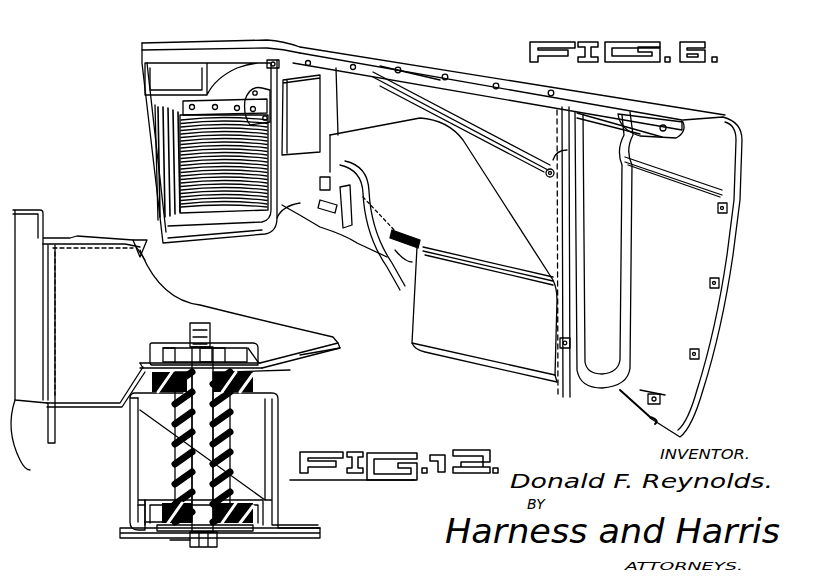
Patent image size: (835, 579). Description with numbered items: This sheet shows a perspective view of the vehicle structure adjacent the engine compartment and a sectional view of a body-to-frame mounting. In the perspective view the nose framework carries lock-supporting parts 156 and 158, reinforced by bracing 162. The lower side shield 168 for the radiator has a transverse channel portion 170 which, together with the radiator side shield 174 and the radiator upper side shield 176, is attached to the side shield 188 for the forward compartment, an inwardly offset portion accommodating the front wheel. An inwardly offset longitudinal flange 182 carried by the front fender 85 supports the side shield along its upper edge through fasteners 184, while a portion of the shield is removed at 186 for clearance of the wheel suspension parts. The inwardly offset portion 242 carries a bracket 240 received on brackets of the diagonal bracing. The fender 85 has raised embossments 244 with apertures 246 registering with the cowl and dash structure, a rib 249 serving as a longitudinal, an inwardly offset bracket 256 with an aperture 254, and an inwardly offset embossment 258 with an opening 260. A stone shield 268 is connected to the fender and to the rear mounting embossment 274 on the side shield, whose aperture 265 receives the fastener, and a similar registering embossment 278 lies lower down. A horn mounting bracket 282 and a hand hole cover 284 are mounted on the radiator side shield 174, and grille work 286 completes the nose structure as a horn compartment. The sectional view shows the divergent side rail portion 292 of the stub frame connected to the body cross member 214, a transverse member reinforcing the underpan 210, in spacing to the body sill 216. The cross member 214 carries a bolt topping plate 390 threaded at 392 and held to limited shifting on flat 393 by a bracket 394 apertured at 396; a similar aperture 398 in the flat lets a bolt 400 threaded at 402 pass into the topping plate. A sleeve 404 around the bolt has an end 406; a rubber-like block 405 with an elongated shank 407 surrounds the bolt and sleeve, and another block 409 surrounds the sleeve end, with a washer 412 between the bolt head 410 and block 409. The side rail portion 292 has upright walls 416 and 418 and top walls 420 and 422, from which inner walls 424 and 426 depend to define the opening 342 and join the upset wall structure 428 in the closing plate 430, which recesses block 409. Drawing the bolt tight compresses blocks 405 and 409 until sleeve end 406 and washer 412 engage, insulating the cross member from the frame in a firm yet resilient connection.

In FIG. 6, the front fender 85 is at (720, 115).
In FIG. 6, the lock-supporting part 156 is at (165, 88).
In FIG. 6, the lock-supporting part 158 is at (185, 42).
In FIG. 6, the bracing 162 is at (173, 163).
In FIG. 6, the lower side shield for the radiator 168 is at (283, 215).
In FIG. 6, the transverse channel portion 170 is at (227, 232).
In FIG. 6, the radiator side shield 174 is at (336, 66).
In FIG. 6, the radiator upper side shield 176 is at (280, 58).
In FIG. 6, the inwardly offset longitudinal flange 182 is at (470, 75).
In FIG. 6, the fasteners 184 is at (445, 75).
In FIG. 6, the removed portion of side shield 186 is at (330, 225).
In FIG. 6, the inwardly offset portion of side shield 188 is at (488, 362).
In FIG. 6, the bracket 240 is at (400, 235).
In FIG. 6, the bracket on diagonal bracing 242 is at (400, 270).
In FIG. 6, the raised embossments 244 is at (713, 355).
In FIG. 6, the apertures 246 is at (697, 355).
In FIG. 6, the rib 249 is at (693, 190).
In FIG. 6, the aperture 254 is at (668, 112).
In FIG. 6, the inwardly offset bracket 256 is at (653, 120).
In FIG. 6, the inwardly offset embossment 258 is at (640, 412).
In FIG. 6, the opening 260 is at (640, 405).
In FIG. 6, the aperture 265 is at (544, 170).
In FIG. 6, the stone shield 268 is at (555, 400).
In FIG. 6, the rear mounting embossment 274 is at (555, 160).
In FIG. 6, the registering embossment 278 is at (555, 340).
In FIG. 6, the horn mounting bracket 282 is at (335, 170).
In FIG. 6, the hand hole cover 284 is at (300, 75).
In FIG. 6, the grille work 286 is at (187, 145).
In FIG. 12, the underpan 210 is at (97, 238).
In FIG. 12, the body cross member 214 is at (138, 256).
In FIG. 12, the body sill 216 is at (33, 439).
In FIG. 12, the divergent side rail portion 292 is at (115, 477).
In FIG. 12, the opening 342 is at (270, 365).
In FIG. 12, the bolt topping plate 390 is at (165, 343).
In FIG. 12, the threaded portion of topping plate 392 is at (193, 325).
In FIG. 12, the flat 393 is at (152, 350).
In FIG. 12, the bracket 394 is at (232, 345).
In FIG. 12, the aperture 396 is at (212, 345).
In FIG. 12, the aperture 398 is at (255, 348).
In FIG. 12, the bolt 400 is at (205, 470).
In FIG. 12, the threaded portion of bolt 402 is at (200, 330).
In FIG. 12, the sleeve 404 is at (192, 460).
In FIG. 12, the rubber-like cushion or block 405 is at (140, 366).
In FIG. 12, the sleeve end 406 is at (230, 480).
In FIG. 12, the elongated shank 407 is at (215, 420).
In FIG. 12, the rubber-like cushion or block 409 is at (155, 515).
In FIG. 12, the bolt head 410 is at (220, 548).
In FIG. 12, the washer 412 is at (168, 540).
In FIG. 12, the upright wall 416 is at (130, 448).
In FIG. 12, the upright wall 418 is at (278, 410).
In FIG. 12, the top wall 420 is at (130, 382).
In FIG. 12, the top wall 422 is at (275, 376).
In FIG. 12, the inner wall 424 is at (140, 495).
In FIG. 12, the inner wall 426 is at (250, 440).
In FIG. 12, the upset wall structure 428 is at (185, 545).
In FIG. 12, the closing plate 430 is at (110, 540).